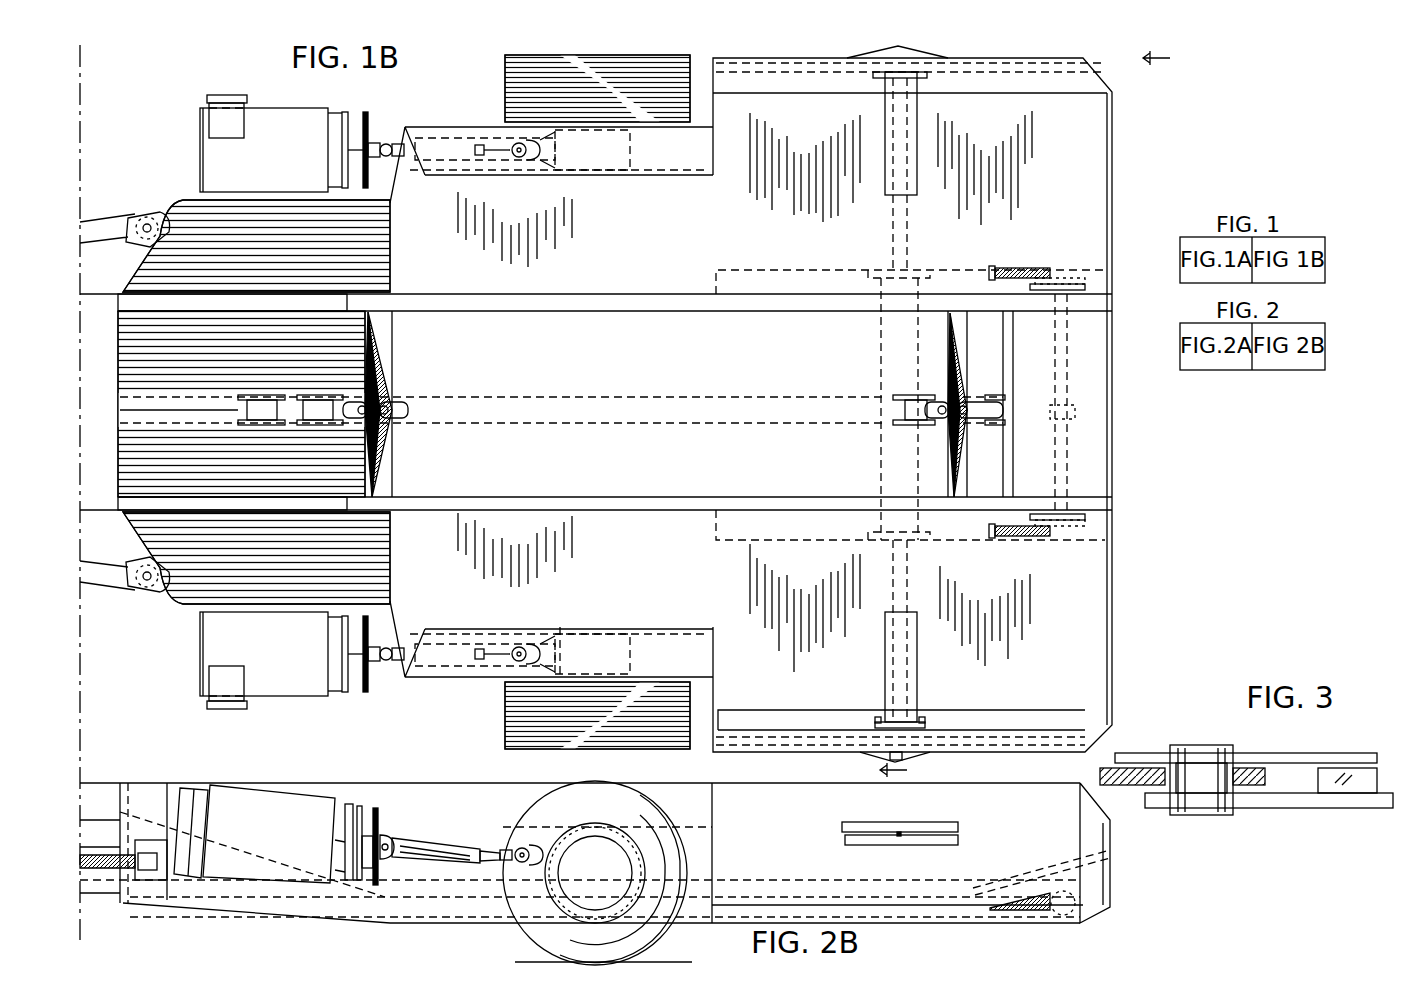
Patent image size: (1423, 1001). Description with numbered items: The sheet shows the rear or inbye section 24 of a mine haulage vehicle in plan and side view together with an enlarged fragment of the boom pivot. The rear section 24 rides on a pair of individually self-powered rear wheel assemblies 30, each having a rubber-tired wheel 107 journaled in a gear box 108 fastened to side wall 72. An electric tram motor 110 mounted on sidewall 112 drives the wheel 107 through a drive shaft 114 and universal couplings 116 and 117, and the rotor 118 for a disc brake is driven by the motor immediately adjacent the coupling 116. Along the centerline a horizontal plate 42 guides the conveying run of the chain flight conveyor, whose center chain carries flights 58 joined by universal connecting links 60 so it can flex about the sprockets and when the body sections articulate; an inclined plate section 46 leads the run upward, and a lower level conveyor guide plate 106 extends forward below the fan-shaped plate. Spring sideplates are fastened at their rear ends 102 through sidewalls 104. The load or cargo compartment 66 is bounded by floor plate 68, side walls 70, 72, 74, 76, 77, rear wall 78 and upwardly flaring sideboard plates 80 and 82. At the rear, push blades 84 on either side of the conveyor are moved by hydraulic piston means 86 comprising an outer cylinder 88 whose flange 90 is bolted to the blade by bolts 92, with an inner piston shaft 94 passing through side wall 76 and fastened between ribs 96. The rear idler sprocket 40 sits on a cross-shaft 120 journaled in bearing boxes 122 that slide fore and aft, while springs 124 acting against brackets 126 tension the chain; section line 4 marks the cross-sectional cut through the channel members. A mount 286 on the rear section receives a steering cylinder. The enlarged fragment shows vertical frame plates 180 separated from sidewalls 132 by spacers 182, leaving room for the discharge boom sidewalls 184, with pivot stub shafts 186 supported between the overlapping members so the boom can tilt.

In FIG. 1B, the section line 4- 4 is at (1041, 414).
In FIG. 1B, the rear or inbye section 24 is at (198, 698).
In FIG. 1B, the rear wheel assembly 30 is at (496, 690).
In FIG. 2B, the rear wheel assembly 30 is at (683, 920).
In FIG. 1B, the rear idler sprocket 40 is at (1075, 412).
In FIG. 2B, the central horizontal plate 42 is at (748, 892).
In FIG. 1B, the inclined plate section 46 is at (241, 404).
In FIG. 2B, the inclined plate section 46 is at (272, 870).
In FIG. 1B, the flights 58 is at (955, 372).
In FIG. 1B, the universal connecting links 60 is at (967, 418).
In FIG. 1B, the load or cargo compartment 66 is at (1097, 644).
In FIG. 1B, the conveyor floor plate 68 is at (745, 391).
In FIG. 1B, the side wall 70 is at (402, 611).
In FIG. 1B, the side wall 72 is at (560, 627).
In FIG. 1B, the side wall 74 is at (718, 708).
In FIG. 1B, the side wall 76 is at (775, 752).
In FIG. 1B, the side wall 77 is at (1095, 740).
In FIG. 1B, the rear wall 78 is at (1112, 582).
In FIG. 1B, the sideboard plate 80 is at (410, 640).
In FIG. 1B, the sideboard plate 82 is at (678, 168).
In FIG. 1B, the push blade 84 is at (795, 540).
In FIG. 1B, the hydraulic piston means 86 is at (928, 690).
In FIG. 1B, the outer cylinder 88 is at (885, 658).
In FIG. 1B, the flange 90 is at (925, 725).
In FIG. 1B, the bolts 92 is at (875, 722).
In FIG. 1B, the inner piston shaft 94 is at (880, 760).
In FIG. 1B, the ribs 96 is at (930, 750).
In FIG. 1B, the rear ends of spring sideplates 102 is at (118, 310).
In FIG. 1B, the sidewalls 104 is at (248, 294).
In FIG. 2B, the lower level conveyor guide plate 106 is at (115, 895).
In FIG. 1B, the wheel 107 is at (597, 402).
In FIG. 1B, the gear box 108 is at (630, 142).
In FIG. 1B, the electric tram motor 110 is at (290, 402).
In FIG. 2B, the electric tram motor 110 is at (254, 834).
In FIG. 1B, the sidewall 112 is at (256, 402).
In FIG. 1B, the drive shaft 114 is at (432, 676).
In FIG. 2B, the drive shaft 114 is at (450, 850).
In FIG. 1B, the universal coupling 116 is at (387, 665).
In FIG. 2B, the universal coupling 116 is at (395, 840).
In FIG. 1B, the universal coupling 117 is at (517, 640).
In FIG. 2B, the universal coupling 117 is at (540, 850).
In FIG. 1B, the rotor 118 is at (368, 693).
In FIG. 2B, the rotor 118 is at (356, 844).
In FIG. 1B, the cross-shaft 120 is at (1067, 460).
In FIG. 1B, the bearing boxes 122 is at (1085, 286).
In FIG. 1B, the springs 124 is at (1040, 268).
In FIG. 1B, the brackets 126 is at (1000, 265).
In FIG. 3, the sidewalls 132 is at (1288, 808).
In FIG. 3, the vertical frame plates 180 is at (1152, 760).
In FIG. 3, the spacers 182 is at (1370, 772).
In FIG. 3, the sidewalls of the discharge boom 184 is at (1138, 785).
In FIG. 3, the pivot stub shafts 186 is at (1200, 775).
In FIG. 1B, the mount 286 is at (152, 588).